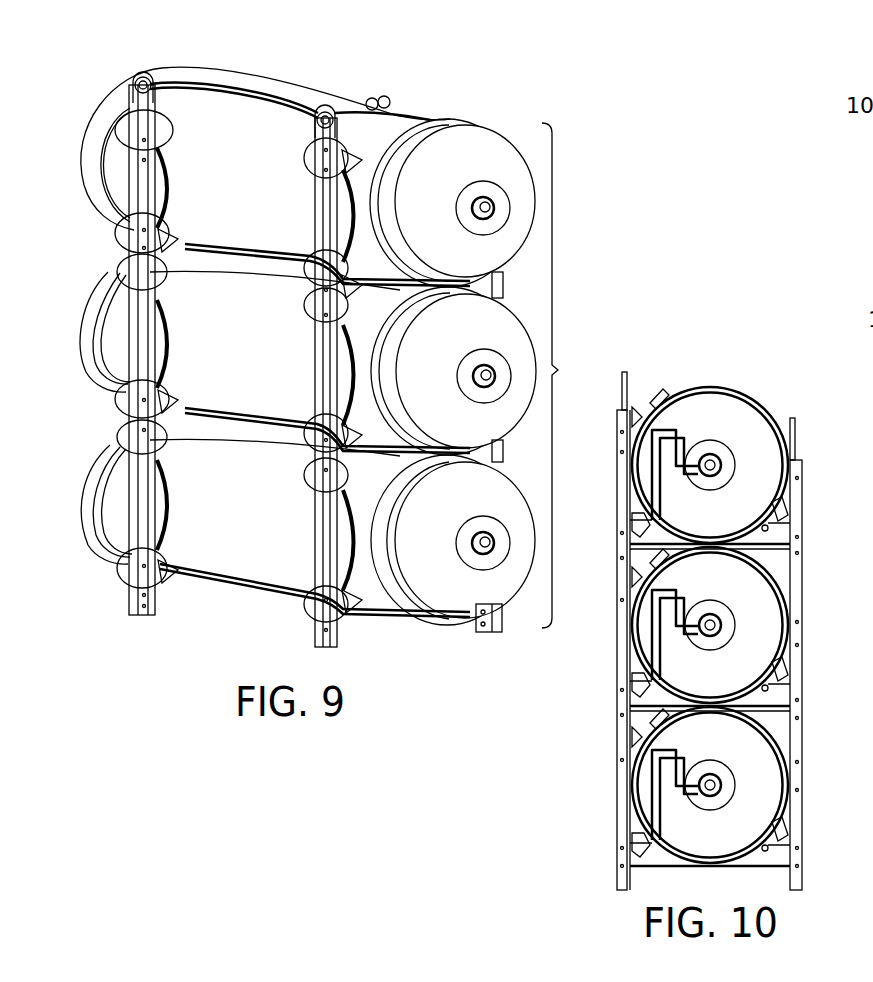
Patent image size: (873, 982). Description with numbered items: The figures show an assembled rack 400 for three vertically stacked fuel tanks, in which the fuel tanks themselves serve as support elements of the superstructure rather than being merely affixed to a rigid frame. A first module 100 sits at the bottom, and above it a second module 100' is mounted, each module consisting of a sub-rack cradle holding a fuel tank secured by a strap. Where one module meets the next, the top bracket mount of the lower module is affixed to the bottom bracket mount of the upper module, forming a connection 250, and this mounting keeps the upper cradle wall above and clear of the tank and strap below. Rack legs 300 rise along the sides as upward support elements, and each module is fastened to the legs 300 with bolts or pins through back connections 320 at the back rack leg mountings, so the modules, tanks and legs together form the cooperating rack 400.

In FIG. 9, the back connections 320 is at (130, 116).
In FIG. 9, the rack 400 is at (564, 151).
In FIG. 10, the rack 400 is at (713, 362).
In FIG. 10, the module 100 is at (743, 785).
In FIG. 10, the second module 100' is at (749, 625).
In FIG. 10, the connection 250 is at (640, 590).
In FIG. 10, the rack legs 300 is at (617, 832).